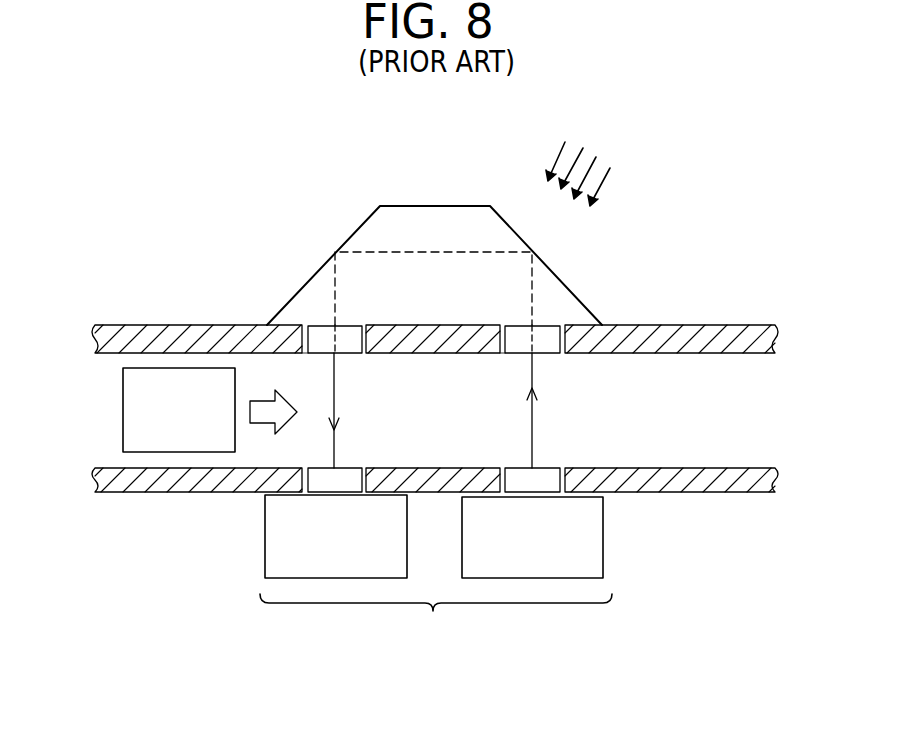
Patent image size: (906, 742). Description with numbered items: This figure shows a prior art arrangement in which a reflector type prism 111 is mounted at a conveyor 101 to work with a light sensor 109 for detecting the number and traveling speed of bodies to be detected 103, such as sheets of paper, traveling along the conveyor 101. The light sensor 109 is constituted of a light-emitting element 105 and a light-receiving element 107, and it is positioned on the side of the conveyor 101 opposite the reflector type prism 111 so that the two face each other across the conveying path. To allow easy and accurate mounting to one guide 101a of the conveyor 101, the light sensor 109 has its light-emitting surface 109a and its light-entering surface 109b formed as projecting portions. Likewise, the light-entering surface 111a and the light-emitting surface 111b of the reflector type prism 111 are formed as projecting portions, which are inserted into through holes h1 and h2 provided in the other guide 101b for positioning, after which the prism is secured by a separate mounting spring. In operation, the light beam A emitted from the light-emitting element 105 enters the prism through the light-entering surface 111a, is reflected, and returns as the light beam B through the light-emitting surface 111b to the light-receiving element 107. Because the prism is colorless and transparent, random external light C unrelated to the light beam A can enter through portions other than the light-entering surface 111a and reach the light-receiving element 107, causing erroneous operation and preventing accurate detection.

The conveyor 101 is at (732, 440).
The guide 101a is at (683, 494).
The guide 101b is at (684, 326).
The body to be detected 103 is at (200, 426).
The light-emitting element 105 is at (553, 548).
The light-receiving element 107 is at (353, 548).
The light sensor 109 is at (436, 576).
The light-emitting surface 109a is at (543, 467).
The light-entering surface 109b is at (353, 466).
The reflector type prism 111 is at (448, 205).
The light-entering surface 111a is at (546, 356).
The light-emitting surface 111b is at (352, 356).
The through hole h1 is at (515, 360).
The through hole h2 is at (313, 356).
The light beam A is at (535, 420).
The light beam B is at (336, 408).
The random external light C is at (578, 163).